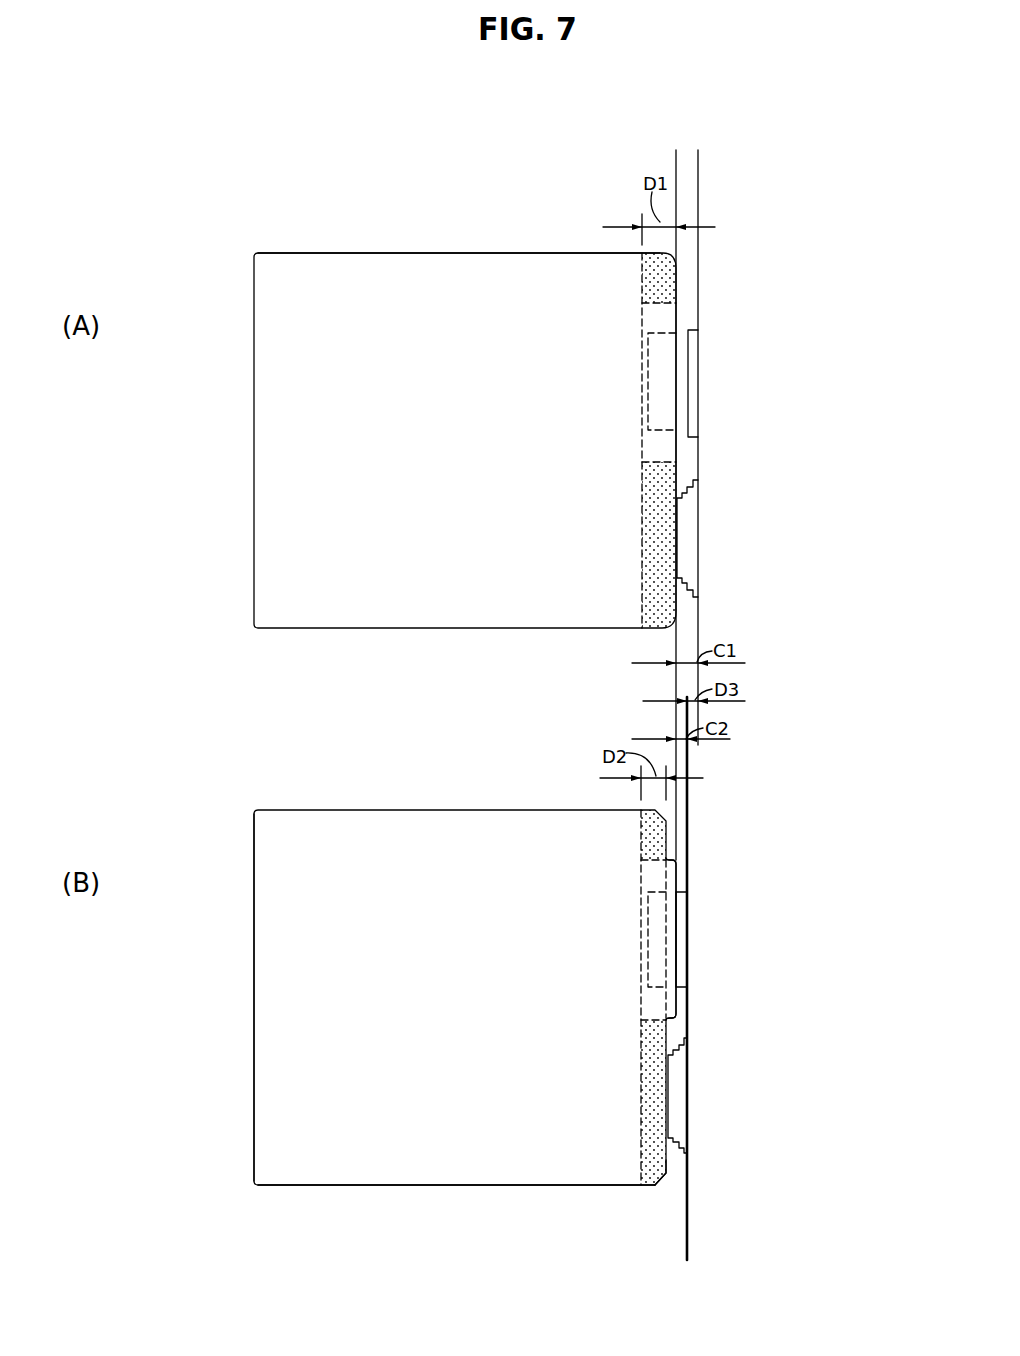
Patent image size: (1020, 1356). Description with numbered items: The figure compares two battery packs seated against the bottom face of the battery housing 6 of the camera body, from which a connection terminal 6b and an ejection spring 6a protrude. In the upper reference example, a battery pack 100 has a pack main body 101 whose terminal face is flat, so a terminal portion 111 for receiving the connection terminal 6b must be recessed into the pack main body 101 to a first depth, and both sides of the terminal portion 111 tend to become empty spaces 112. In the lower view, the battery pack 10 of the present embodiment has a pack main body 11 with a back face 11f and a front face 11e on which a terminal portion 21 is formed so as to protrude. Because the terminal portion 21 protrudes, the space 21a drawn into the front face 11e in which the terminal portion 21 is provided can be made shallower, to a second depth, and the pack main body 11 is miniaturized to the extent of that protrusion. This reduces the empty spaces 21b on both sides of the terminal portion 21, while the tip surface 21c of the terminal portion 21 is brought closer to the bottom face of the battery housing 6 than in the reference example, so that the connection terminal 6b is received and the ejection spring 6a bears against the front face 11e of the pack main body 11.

The battery housing 6 is at (402, 236).
The ejection spring 6a is at (690, 522).
The connection terminal 6b is at (693, 363).
The battery pack 100 is at (196, 326).
The pack main body 101 is at (260, 410).
The terminal portion 111 is at (624, 374).
The empty spaces 112 is at (656, 544).
The battery pack 10 is at (178, 902).
The pack main body 11 is at (275, 1090).
The front face 11e is at (668, 1160).
The back face 11f is at (255, 976).
The terminal portion 21 is at (680, 878).
The space 21a is at (650, 1002).
The empty spaces 21b is at (641, 1112).
The tip surface 21c is at (677, 958).